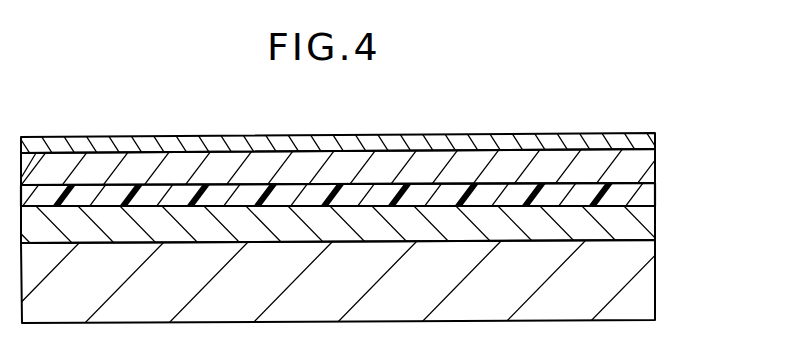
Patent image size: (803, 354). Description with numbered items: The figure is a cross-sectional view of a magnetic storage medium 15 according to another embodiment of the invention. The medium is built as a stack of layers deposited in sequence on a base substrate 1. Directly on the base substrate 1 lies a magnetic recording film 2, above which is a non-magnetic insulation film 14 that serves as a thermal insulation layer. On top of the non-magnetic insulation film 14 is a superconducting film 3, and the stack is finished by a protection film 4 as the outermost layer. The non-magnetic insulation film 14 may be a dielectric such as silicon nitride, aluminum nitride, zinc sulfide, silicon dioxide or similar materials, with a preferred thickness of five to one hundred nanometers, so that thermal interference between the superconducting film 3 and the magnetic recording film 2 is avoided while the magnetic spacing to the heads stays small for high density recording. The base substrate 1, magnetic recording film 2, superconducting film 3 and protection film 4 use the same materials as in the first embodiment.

The base substrate 1 is at (655, 262).
The magnetic recording film 2 is at (655, 222).
The superconducting film 3 is at (655, 167).
The protection film 4 is at (655, 136).
The non-magnetic insulation film 14 is at (374, 202).
The magnetic storage medium 15 is at (398, 212).